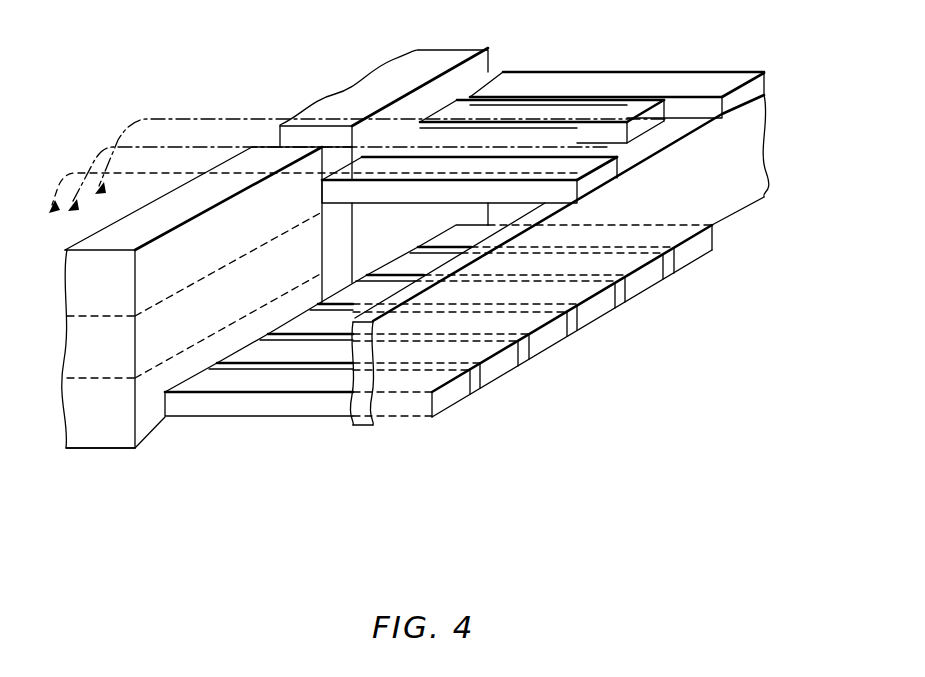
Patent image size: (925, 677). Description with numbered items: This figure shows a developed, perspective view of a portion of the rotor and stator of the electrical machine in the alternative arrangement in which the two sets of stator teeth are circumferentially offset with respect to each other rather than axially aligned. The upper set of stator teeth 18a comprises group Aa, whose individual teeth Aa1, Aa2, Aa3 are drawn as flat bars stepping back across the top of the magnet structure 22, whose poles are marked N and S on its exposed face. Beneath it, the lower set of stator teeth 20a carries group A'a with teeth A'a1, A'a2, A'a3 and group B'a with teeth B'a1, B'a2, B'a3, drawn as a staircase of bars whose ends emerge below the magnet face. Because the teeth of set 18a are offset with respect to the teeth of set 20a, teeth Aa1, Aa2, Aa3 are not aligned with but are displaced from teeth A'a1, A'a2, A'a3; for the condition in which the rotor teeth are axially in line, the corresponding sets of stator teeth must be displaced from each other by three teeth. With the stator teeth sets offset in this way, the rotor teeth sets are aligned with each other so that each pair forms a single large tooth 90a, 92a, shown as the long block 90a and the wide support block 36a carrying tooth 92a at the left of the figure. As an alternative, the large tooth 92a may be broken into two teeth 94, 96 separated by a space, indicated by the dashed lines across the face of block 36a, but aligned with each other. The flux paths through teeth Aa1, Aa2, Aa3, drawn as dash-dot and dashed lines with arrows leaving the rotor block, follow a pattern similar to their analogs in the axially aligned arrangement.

The support block 36a is at (191, 314).
The tooth 94 is at (108, 300).
The single large tooth 92a is at (110, 361).
The tooth 96 is at (78, 460).
The single large tooth 90a is at (418, 57).
The group Aa is at (580, 119).
The tooth Aa1 is at (622, 110).
The tooth Aa2 is at (543, 137).
The tooth Aa3 is at (470, 163).
The set of stator teeth 18a is at (776, 72).
The permanent magnet 22 is at (772, 160).
The north pole N is at (742, 124).
The south pole S is at (741, 200).
The set of stator teeth 20a is at (749, 224).
The group A'a is at (543, 298).
The tooth A'a1 is at (593, 263).
The tooth A'a2 is at (536, 292).
The tooth A'a3 is at (483, 323).
The coil group B'a is at (386, 383).
The coil B'a1 is at (433, 353).
The coil B'a2 is at (383, 383).
The coil B'a3 is at (335, 413).